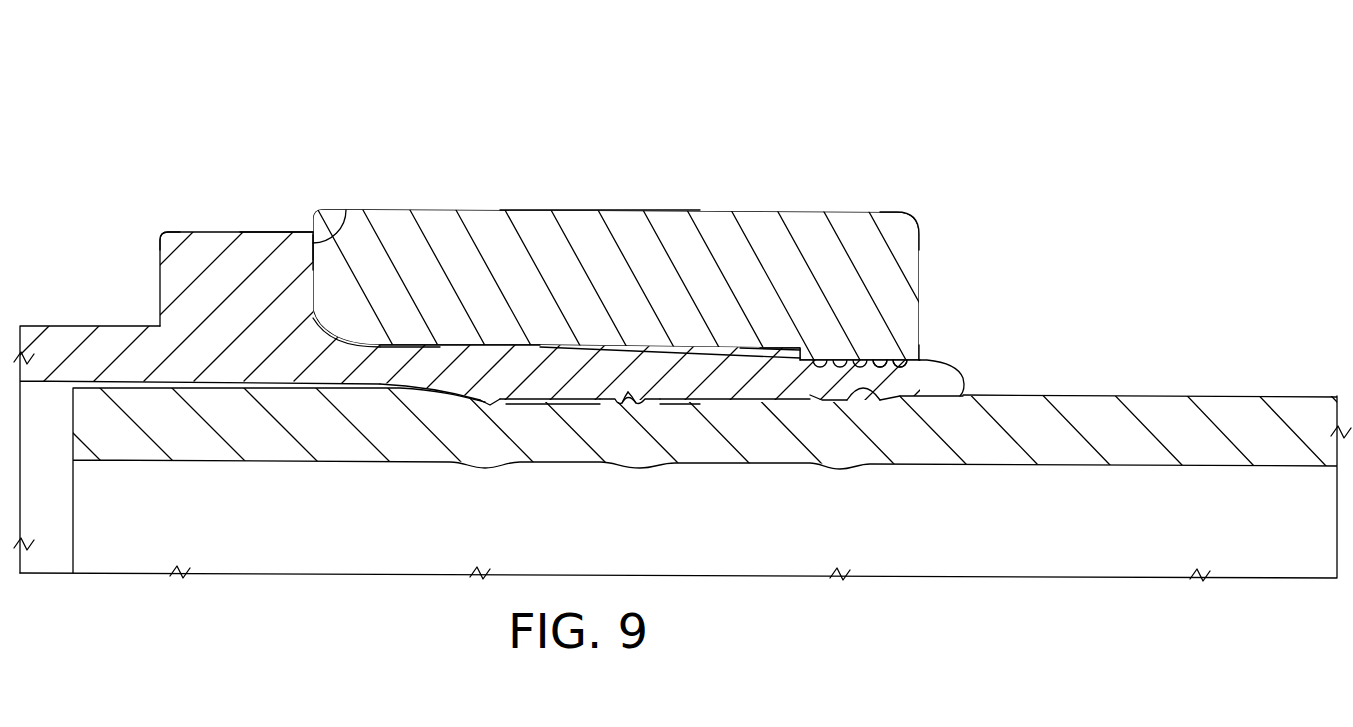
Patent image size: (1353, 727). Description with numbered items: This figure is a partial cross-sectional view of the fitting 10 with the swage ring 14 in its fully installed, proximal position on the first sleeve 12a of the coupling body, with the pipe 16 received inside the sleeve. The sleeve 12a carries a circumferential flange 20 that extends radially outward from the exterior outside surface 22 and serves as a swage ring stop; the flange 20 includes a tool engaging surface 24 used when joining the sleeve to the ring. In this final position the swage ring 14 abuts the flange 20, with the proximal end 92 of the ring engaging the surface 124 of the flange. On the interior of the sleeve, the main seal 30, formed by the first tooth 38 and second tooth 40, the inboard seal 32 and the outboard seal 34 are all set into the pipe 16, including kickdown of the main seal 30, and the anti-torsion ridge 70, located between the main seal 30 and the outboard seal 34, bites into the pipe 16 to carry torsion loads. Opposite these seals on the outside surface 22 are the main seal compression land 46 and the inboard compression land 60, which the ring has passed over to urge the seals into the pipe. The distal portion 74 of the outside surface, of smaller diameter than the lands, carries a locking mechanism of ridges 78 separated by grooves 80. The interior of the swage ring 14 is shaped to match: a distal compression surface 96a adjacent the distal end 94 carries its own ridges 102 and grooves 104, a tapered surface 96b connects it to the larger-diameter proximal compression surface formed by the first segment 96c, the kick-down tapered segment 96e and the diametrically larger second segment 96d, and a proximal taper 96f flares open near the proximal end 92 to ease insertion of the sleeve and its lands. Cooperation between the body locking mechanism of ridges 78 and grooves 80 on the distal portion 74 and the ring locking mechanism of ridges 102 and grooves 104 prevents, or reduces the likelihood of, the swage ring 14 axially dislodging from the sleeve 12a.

The fitting 10 is at (703, 98).
The first sleeve 12a is at (298, 218).
The swage ring 14 is at (604, 200).
The pipe 16 is at (1155, 410).
The circumferential flange 20 is at (205, 232).
The exterior outside surface 22 is at (82, 326).
The tool engaging surface 24 is at (152, 233).
The main seal 30 is at (622, 410).
The inboard seal 32 is at (490, 404).
The outboard seal 34 is at (884, 402).
The first tooth 38 is at (640, 406).
The second tooth 40 is at (621, 406).
The main seal compression land 46 is at (624, 352).
The inboard compression land 60 is at (502, 350).
The anti-torsion ridge 70 is at (840, 402).
The distal portion 74 is at (800, 348).
The ridges 78 is at (880, 360).
The grooves 80 is at (853, 362).
The proximal end 92 is at (313, 250).
The distal end 94 is at (926, 236).
The distal compression surface 96a is at (866, 402).
The tapered surface 96b is at (760, 350).
The first segment 96c is at (672, 404).
The second segment 96d is at (398, 347).
The kick-down tapered segment 96e is at (545, 404).
The proximal taper 96f is at (345, 340).
The ridges 102 is at (905, 398).
The grooves 104 is at (907, 395).
The flange surface 124 is at (337, 236).